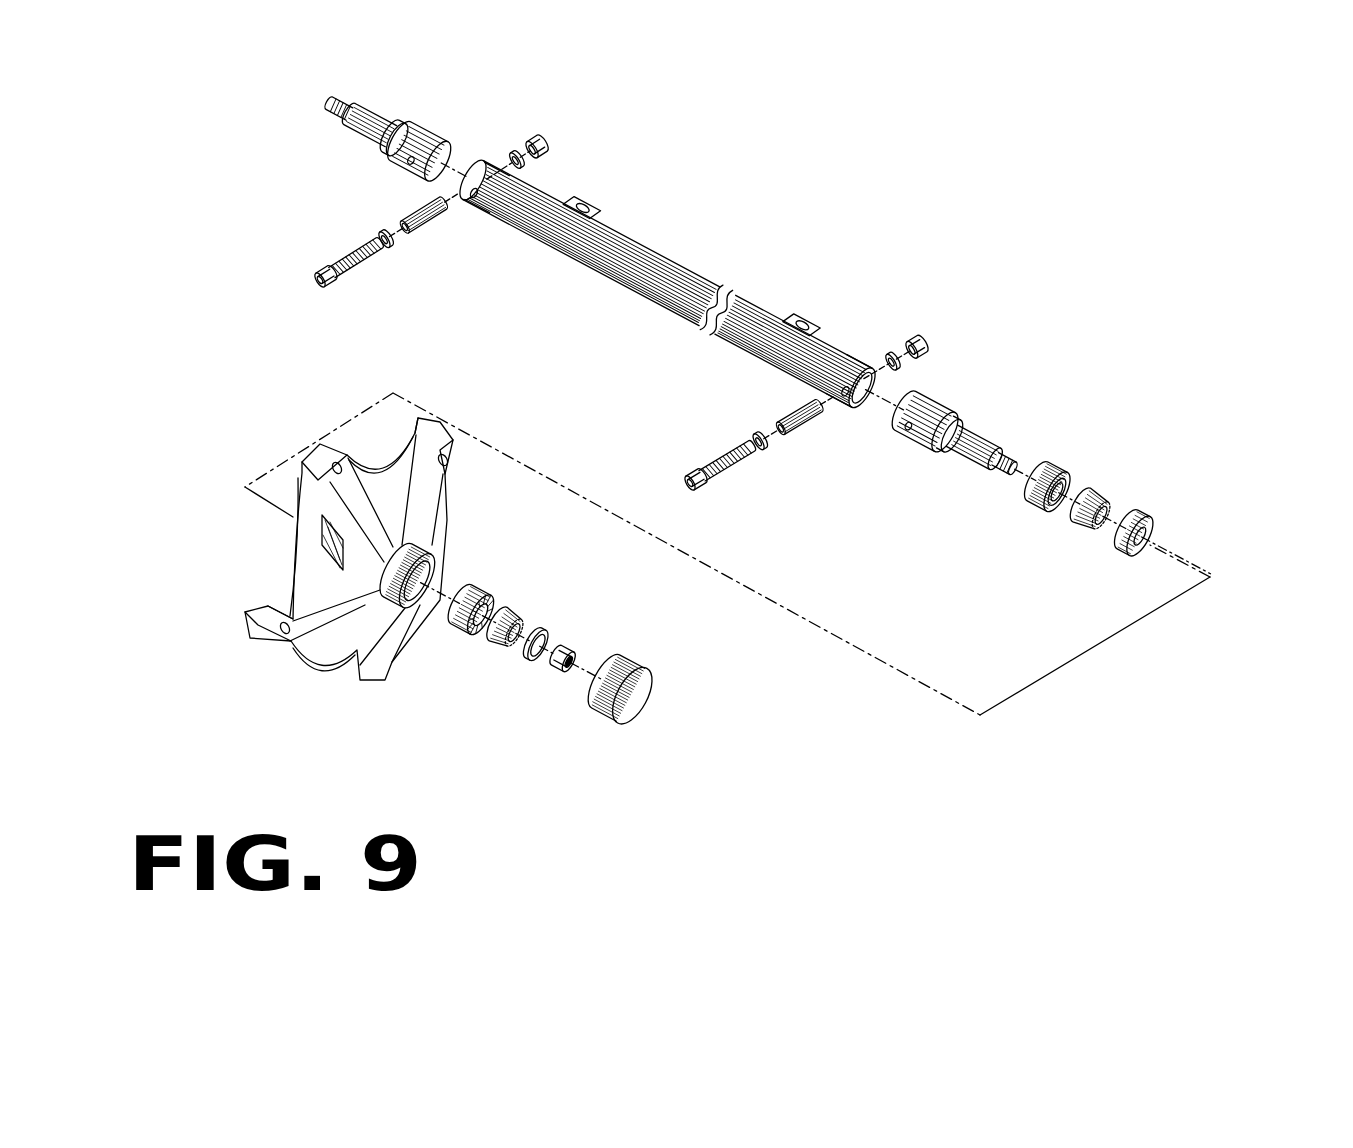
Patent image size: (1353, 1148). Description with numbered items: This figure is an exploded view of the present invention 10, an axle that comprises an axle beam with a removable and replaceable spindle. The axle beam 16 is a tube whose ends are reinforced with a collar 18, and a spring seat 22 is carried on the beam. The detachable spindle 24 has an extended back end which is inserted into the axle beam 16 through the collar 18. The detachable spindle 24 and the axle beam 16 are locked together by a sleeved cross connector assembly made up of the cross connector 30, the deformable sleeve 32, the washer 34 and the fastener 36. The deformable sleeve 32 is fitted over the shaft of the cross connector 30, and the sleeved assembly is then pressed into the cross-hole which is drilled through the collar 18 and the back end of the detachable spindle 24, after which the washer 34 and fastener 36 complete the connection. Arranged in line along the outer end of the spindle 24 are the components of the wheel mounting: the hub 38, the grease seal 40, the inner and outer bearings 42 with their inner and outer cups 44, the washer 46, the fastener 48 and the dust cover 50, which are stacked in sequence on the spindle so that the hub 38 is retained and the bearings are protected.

The present invention 10 is at (905, 177).
The axle tube 16 is at (652, 247).
The collar 18 is at (466, 186).
The spring seat 22 is at (590, 208).
The spindle 24 is at (333, 103).
The cross connector 30 is at (312, 282).
The deformable sleeve 32 is at (438, 222).
The washer 34 is at (511, 153).
The fastener 36 is at (541, 143).
The hub 38 is at (305, 553).
The grease seal 40 is at (1062, 468).
The bearings 42 is at (1104, 491).
The inner and outer cups 44 is at (1122, 553).
The washer 46 is at (533, 665).
The fastener 48 is at (560, 680).
The dust cover 50 is at (648, 702).